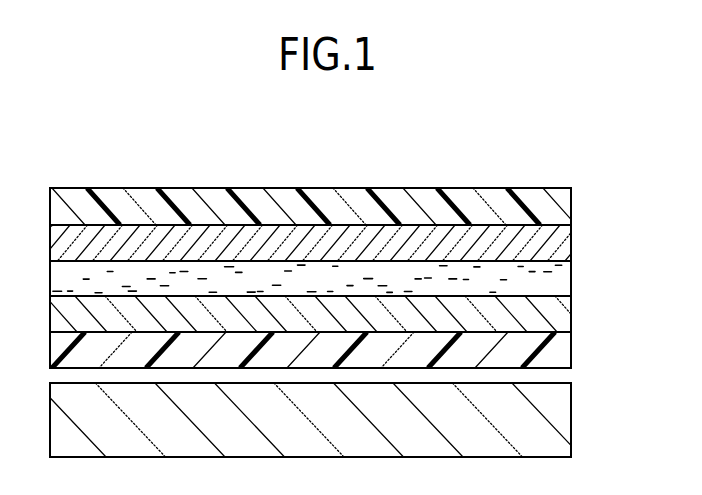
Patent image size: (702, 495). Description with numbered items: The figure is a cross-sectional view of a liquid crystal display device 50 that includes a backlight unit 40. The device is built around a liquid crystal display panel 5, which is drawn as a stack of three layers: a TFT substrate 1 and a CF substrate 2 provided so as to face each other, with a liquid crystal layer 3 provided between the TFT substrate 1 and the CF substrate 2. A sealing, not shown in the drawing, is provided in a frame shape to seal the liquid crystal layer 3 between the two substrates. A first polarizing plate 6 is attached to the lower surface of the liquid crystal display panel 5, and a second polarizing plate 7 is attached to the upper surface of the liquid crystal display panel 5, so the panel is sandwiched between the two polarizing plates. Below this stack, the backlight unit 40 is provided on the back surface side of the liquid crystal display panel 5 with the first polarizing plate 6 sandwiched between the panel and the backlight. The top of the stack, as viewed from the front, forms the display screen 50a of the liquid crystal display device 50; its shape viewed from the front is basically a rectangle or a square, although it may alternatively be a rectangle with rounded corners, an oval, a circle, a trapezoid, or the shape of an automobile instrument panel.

The liquid crystal display device 50 is at (356, 222).
The display screen 50a is at (503, 175).
The second polarizing plate 7 is at (555, 205).
The liquid crystal display panel 5 is at (356, 277).
The CF substrate 2 is at (557, 242).
The liquid crystal layer 3 is at (555, 277).
The TFT substrate 1 is at (340, 311).
The first polarizing plate 6 is at (555, 352).
The backlight unit 40 is at (553, 412).